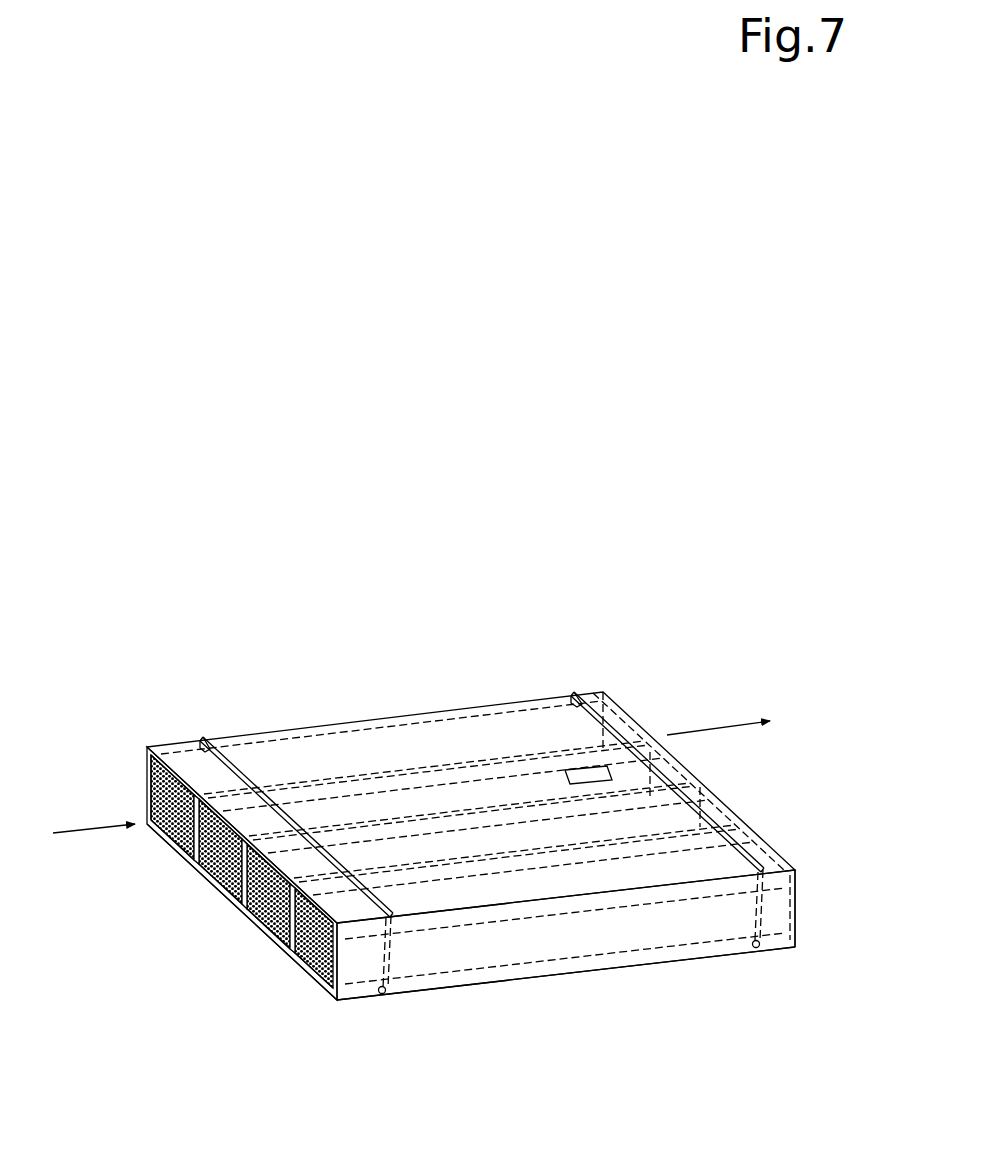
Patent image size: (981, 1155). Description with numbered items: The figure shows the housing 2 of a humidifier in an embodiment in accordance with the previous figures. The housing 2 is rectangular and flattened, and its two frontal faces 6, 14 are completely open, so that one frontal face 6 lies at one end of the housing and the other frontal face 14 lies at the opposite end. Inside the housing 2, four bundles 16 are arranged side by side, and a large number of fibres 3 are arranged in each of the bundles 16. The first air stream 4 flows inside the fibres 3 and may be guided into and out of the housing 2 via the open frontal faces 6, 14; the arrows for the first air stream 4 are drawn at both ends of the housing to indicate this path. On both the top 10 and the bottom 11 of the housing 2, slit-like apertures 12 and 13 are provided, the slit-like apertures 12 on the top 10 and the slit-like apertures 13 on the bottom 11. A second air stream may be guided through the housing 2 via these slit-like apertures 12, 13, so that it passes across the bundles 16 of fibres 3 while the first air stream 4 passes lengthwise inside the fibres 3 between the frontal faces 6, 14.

The housing 2 is at (640, 923).
The fibres 3 is at (302, 962).
The first air stream 4 is at (415, 776).
The frontal face 6 is at (320, 980).
The top 10 is at (353, 735).
The bottom 11 is at (495, 984).
The slit-like apertures 12 is at (205, 745).
The slit-like apertures 13 is at (384, 992).
The frontal face 14 is at (797, 878).
The bundles 16 is at (297, 957).